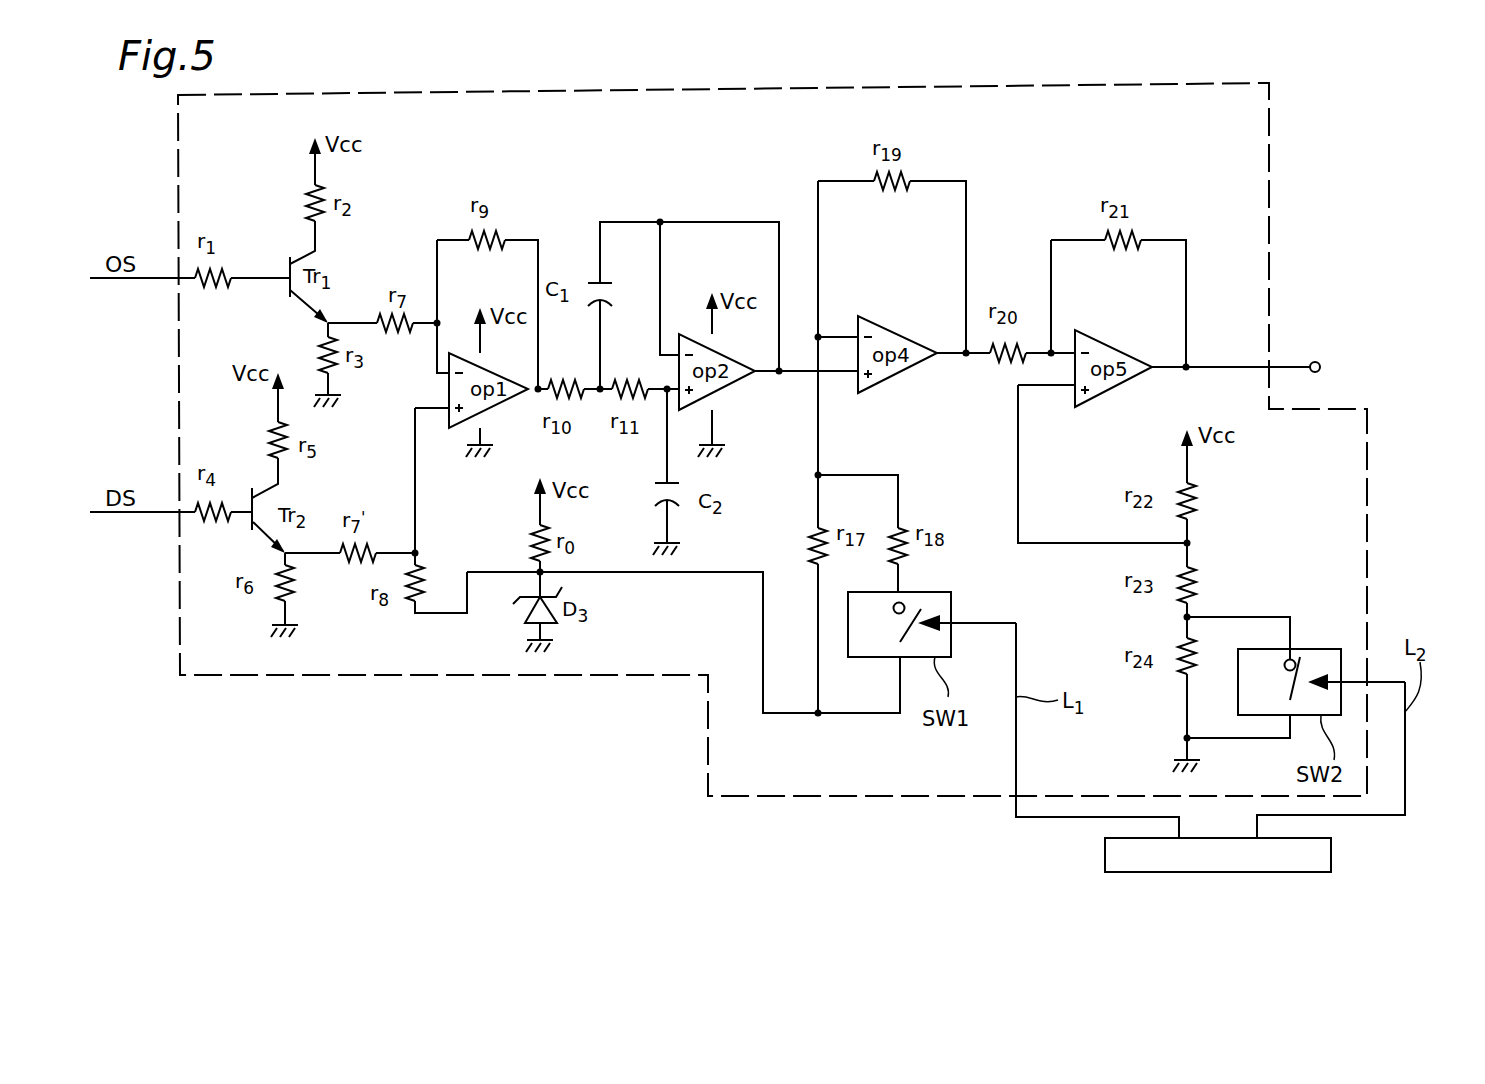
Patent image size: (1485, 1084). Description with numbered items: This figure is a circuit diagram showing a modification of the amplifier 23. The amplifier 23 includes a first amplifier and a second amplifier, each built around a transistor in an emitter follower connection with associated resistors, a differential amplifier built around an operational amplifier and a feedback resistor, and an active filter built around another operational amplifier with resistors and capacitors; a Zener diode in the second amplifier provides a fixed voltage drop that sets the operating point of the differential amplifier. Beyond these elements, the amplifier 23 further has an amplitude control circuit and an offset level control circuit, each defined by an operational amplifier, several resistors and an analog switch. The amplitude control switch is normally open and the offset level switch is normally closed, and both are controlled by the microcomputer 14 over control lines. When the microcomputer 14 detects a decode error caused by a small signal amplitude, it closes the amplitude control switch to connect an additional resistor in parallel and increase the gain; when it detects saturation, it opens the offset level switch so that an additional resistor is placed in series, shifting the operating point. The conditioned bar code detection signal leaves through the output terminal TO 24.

The amplifier 23 is at (462, 92).
The output terminal TO 24 is at (1358, 367).
The microcomputer 14 is at (1105, 860).